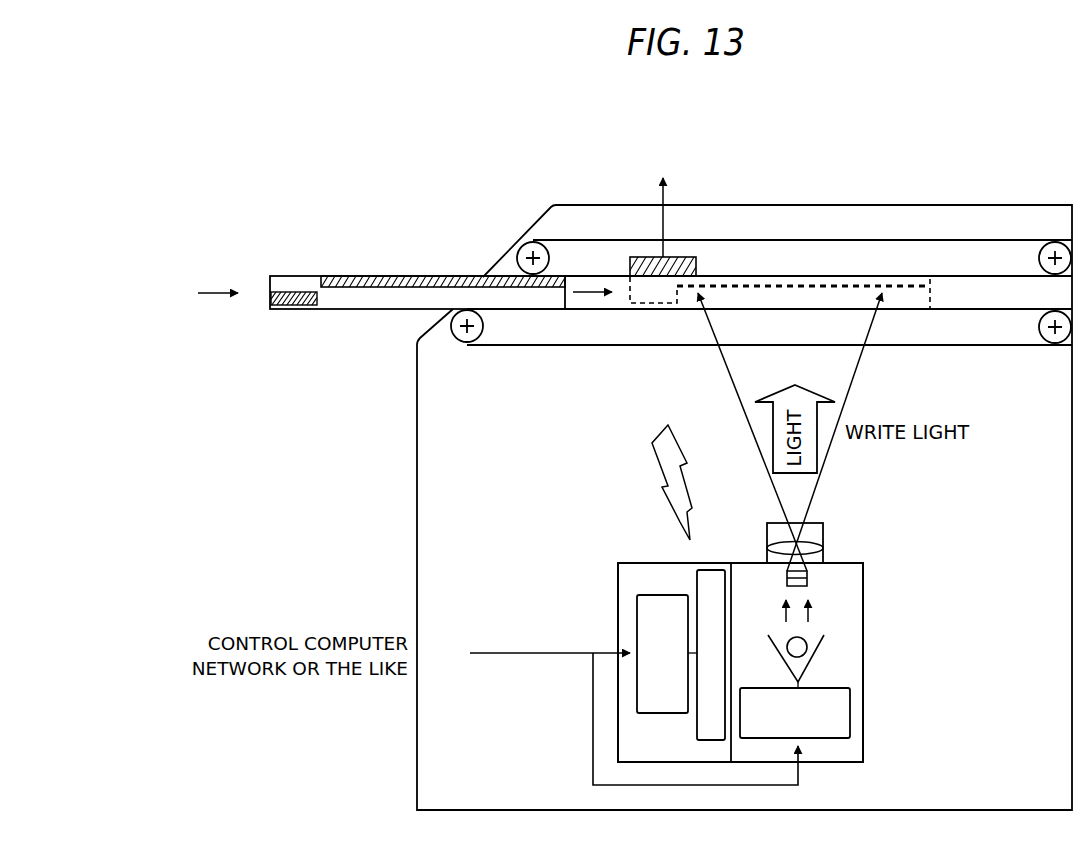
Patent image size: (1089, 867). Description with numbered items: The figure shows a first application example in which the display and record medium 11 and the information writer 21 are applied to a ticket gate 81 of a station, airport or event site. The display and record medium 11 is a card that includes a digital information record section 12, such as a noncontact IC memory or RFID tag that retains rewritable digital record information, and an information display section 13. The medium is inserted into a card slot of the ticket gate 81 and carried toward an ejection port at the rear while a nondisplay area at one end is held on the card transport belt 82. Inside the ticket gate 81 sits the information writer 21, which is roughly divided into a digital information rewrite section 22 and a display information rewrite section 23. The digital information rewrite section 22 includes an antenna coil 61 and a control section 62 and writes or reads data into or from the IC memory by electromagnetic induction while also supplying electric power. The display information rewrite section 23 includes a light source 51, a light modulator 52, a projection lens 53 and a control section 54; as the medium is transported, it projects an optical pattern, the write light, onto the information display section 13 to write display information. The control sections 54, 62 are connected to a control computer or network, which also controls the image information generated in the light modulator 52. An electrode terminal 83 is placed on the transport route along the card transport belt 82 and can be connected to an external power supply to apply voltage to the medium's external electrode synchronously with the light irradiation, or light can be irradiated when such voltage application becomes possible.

The display and record medium 11 is at (262, 264).
The digital information record section 12 is at (291, 306).
The information display section 13 is at (388, 276).
The information writer 21 is at (880, 752).
The digital information rewrite section 22 is at (652, 563).
The display information rewrite section 23 is at (863, 612).
The light source 51 is at (808, 648).
The light modulator 52 is at (808, 580).
The projection lens 53 is at (823, 548).
The control section 54 is at (850, 710).
The antenna coil 61 is at (697, 577).
The control section 62 is at (637, 618).
The ticket gate 81 is at (417, 445).
The card transport belt 82 is at (957, 310).
The electrode terminal 83 is at (640, 257).